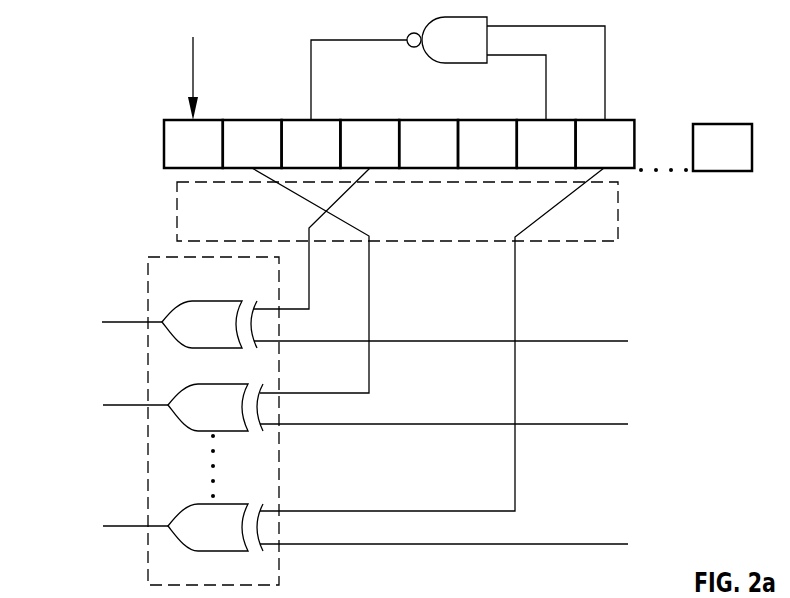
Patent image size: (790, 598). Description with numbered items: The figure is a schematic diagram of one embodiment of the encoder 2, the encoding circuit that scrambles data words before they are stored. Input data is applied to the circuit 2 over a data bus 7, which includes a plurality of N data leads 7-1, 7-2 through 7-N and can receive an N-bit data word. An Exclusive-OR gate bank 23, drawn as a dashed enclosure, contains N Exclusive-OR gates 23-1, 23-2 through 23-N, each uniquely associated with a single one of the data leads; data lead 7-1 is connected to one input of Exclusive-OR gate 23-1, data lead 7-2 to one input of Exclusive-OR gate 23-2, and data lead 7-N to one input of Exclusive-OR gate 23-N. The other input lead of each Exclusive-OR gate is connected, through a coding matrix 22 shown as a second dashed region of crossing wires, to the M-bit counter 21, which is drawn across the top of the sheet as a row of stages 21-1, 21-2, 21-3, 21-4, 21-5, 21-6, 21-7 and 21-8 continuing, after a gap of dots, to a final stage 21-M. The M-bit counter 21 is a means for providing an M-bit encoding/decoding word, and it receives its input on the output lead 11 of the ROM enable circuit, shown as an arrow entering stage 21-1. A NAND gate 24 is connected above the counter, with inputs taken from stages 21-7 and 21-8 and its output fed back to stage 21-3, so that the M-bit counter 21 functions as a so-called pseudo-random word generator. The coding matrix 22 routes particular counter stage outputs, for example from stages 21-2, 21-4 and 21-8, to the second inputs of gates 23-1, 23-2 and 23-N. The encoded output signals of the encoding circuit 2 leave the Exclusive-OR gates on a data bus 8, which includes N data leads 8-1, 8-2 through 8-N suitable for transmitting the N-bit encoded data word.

The encoder 2 is at (98, 168).
The output lead of ROM enable circuit 11 is at (194, 65).
The M-bit counter 21 is at (724, 176).
The counter stage 21-1 is at (216, 157).
The counter stage 21-2 is at (275, 157).
The counter stage 21-3 is at (334, 157).
The counter stage 21-4 is at (347, 157).
The counter stage 21-5 is at (406, 157).
The counter stage 21-6 is at (510, 157).
The counter stage 21-7 is at (569, 157).
The counter stage 21-8 is at (628, 157).
The counter stage 21-M is at (700, 161).
The coding matrix 22 is at (626, 216).
The Exclusive-OR gate bank 23 is at (286, 575).
The Exclusive-OR gate 23-1 is at (228, 335).
The Exclusive-OR gate 23-2 is at (234, 418).
The Exclusive-OR gate 23-N is at (188, 539).
The NAND gate 24 is at (452, 63).
The data bus 7 is at (680, 312).
The data lead 7-1 is at (463, 342).
The data lead 7-2 is at (466, 425).
The data lead 7-N is at (466, 545).
The data bus 8 is at (51, 293).
The data lead 8-1 is at (111, 323).
The data lead 8-2 is at (114, 406).
The data lead 8-N is at (112, 527).